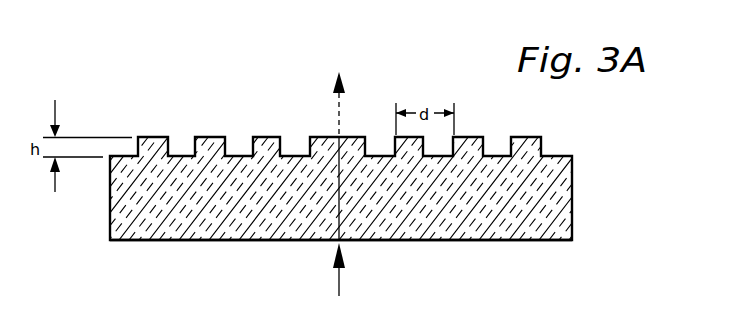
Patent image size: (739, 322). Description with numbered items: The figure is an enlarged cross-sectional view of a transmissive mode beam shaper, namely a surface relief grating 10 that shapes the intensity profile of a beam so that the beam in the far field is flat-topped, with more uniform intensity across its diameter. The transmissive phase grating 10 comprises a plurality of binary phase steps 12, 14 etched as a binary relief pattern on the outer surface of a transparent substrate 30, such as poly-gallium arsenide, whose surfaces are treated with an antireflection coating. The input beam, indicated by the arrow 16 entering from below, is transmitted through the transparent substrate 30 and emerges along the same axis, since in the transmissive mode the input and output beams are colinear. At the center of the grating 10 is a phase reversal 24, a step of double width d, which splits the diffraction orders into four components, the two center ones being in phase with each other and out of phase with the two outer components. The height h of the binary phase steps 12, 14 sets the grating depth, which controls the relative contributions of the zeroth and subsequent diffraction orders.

The surface relief grating 10 is at (353, 195).
The binary phase step 12 is at (184, 154).
The binary phase step 14 is at (208, 137).
The incident light beam 16 is at (337, 277).
The phase reversal 24 is at (342, 138).
The transparent substrate 30 is at (483, 242).